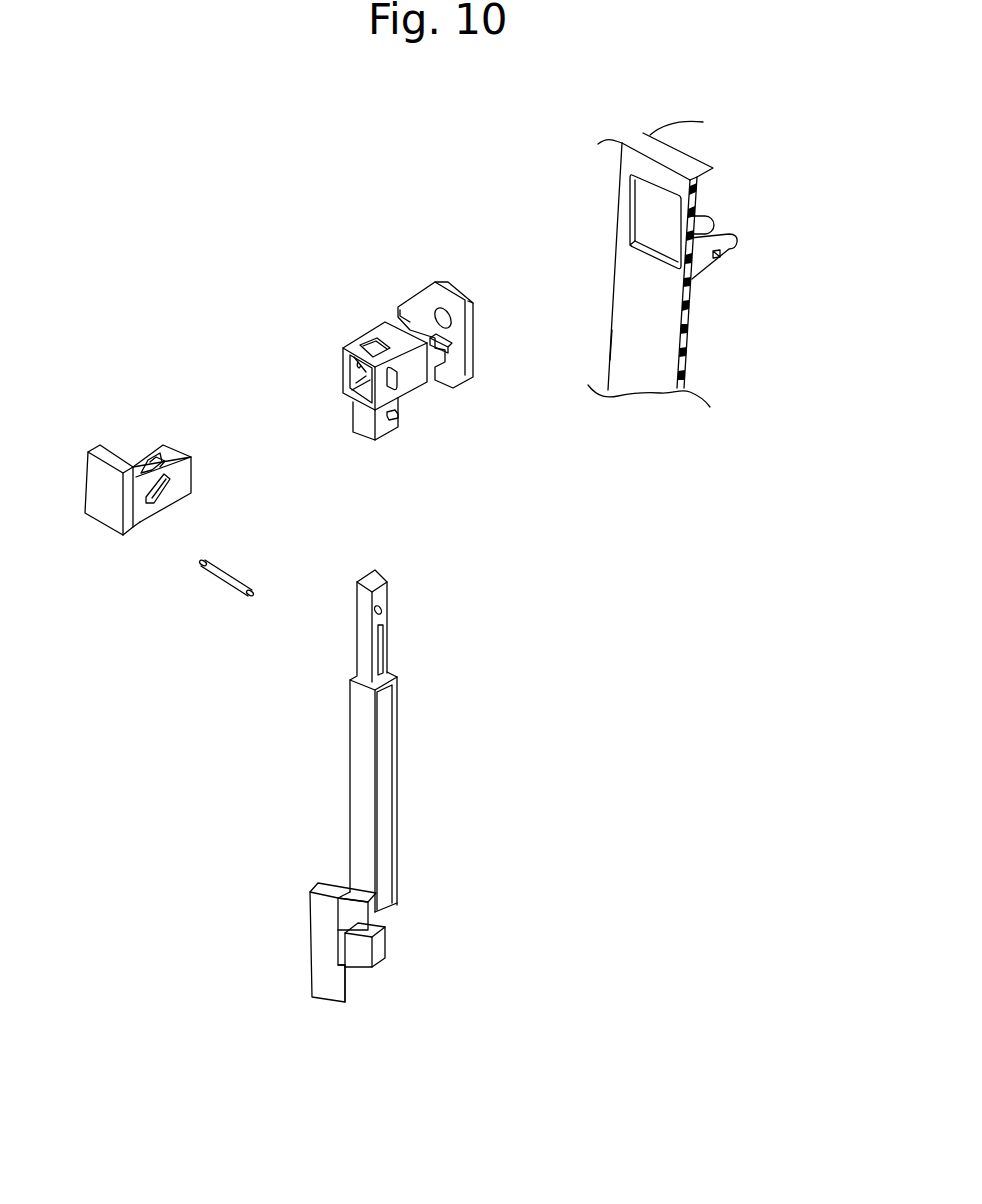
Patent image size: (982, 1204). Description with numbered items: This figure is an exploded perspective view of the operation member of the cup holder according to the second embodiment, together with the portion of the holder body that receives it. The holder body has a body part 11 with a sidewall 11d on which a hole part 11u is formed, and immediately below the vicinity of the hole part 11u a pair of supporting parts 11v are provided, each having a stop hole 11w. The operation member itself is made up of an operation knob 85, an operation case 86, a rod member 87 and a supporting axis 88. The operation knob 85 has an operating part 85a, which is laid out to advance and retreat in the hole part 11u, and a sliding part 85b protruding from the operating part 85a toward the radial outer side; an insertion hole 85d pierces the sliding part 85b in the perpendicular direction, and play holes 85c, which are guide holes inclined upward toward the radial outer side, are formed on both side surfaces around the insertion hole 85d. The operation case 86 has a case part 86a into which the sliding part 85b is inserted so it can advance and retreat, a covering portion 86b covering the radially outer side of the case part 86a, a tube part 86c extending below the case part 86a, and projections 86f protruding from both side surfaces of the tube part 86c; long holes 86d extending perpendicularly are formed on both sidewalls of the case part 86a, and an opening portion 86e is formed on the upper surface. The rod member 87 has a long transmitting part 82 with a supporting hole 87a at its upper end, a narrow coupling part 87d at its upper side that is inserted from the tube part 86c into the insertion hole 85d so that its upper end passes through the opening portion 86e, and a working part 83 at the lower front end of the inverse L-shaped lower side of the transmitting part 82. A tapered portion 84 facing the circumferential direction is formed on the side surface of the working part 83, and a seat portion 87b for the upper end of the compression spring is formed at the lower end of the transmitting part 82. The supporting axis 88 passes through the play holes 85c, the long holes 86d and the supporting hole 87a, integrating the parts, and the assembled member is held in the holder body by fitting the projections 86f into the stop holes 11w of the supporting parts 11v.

The body part 11 is at (668, 343).
The sidewall 11d is at (622, 352).
The hole part 11u is at (640, 205).
The supporting parts 11v is at (713, 220).
The stop holes 11w is at (718, 258).
The operation knob 85 is at (160, 440).
The operating part 85a is at (105, 508).
The sliding part 85b is at (182, 478).
The play holes 85c is at (142, 457).
The insertion hole 85d is at (162, 460).
The operation case 86 is at (383, 322).
The case part 86a is at (413, 380).
The covering portion 86b is at (465, 300).
The tube part 86c is at (378, 427).
The long holes 86d is at (355, 366).
The opening portion 86e is at (362, 346).
The projections 86f is at (397, 417).
The rod member 87 is at (397, 752).
The supporting hole 87a is at (382, 612).
The seat portion 87b is at (388, 953).
The coupling part 87d is at (388, 655).
The transmitting part 82 is at (400, 812).
The working part 83 is at (348, 975).
The tapered portion 84 is at (347, 988).
The supporting axis 88 is at (235, 583).